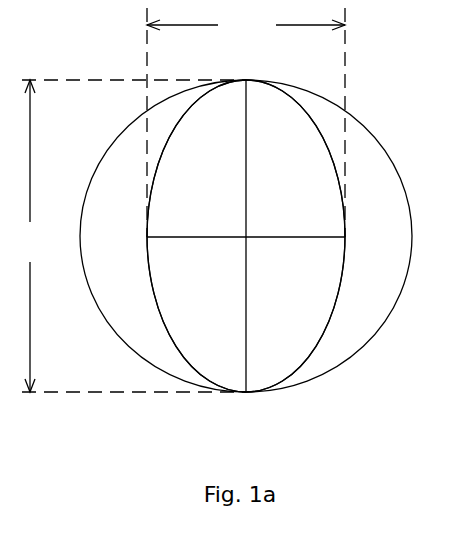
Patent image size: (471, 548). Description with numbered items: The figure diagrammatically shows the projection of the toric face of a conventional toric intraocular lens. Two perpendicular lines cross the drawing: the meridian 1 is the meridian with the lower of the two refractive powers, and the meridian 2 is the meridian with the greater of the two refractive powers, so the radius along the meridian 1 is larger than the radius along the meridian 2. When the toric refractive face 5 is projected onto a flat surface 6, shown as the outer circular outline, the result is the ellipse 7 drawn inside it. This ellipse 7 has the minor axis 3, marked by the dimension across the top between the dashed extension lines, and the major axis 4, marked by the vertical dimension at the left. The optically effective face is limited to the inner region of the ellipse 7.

The meridian 1 is at (247, 158).
The meridian 2 is at (282, 236).
The minor axis 3 is at (246, 122).
The major axis 4 is at (134, 236).
The toric refractive face 5 is at (205, 313).
The flat surface 6 is at (363, 295).
The ellipse 7 is at (313, 352).